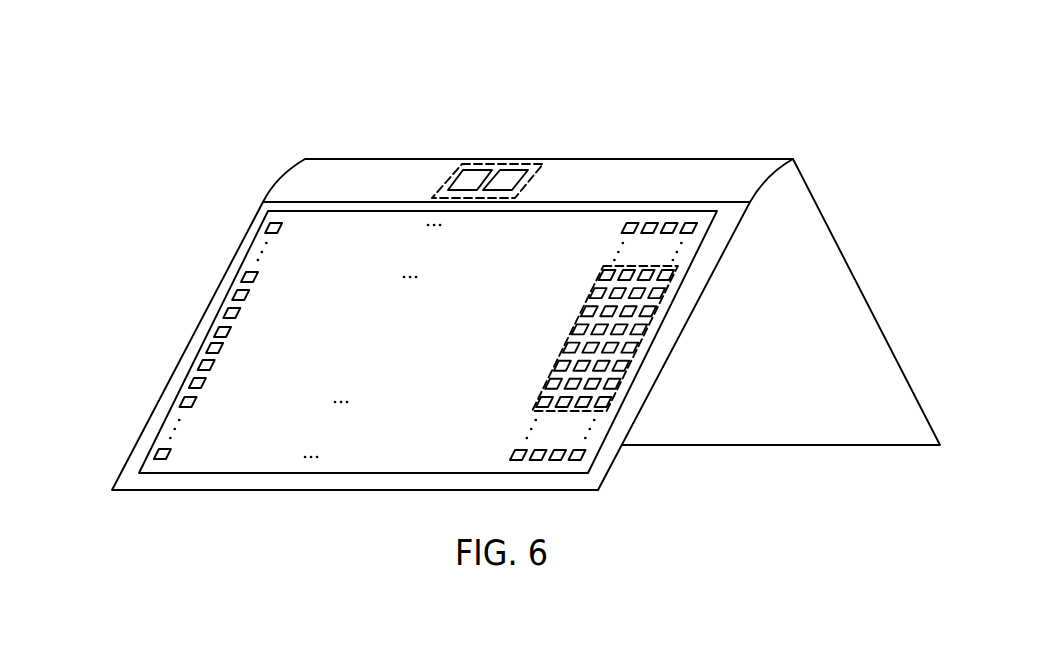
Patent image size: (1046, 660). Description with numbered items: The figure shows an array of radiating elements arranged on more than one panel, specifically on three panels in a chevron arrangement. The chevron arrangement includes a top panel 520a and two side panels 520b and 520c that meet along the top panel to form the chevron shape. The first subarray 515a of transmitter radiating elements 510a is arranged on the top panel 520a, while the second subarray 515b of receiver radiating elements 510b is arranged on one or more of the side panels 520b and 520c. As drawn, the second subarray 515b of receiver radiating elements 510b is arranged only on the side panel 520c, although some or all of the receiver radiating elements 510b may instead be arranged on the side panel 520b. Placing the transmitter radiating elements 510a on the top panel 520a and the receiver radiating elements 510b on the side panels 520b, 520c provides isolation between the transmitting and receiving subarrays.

The transmitter radiating elements 510a is at (470, 178).
The first subarray 515a is at (518, 190).
The receiver radiating elements 510b is at (548, 385).
The second subarray 515b is at (570, 339).
The top panel 520a is at (737, 173).
The side panel 520b is at (830, 237).
The side panel 520c is at (158, 400).